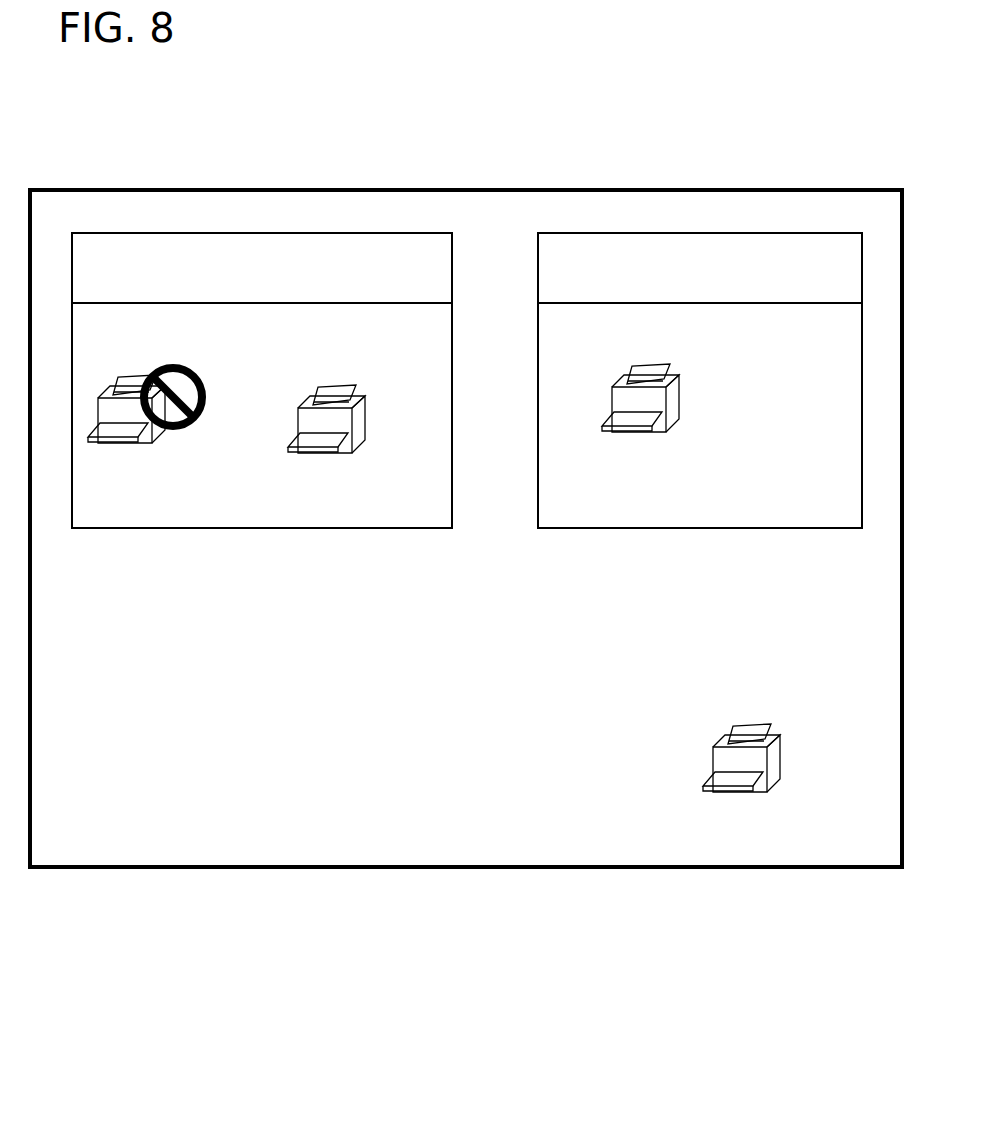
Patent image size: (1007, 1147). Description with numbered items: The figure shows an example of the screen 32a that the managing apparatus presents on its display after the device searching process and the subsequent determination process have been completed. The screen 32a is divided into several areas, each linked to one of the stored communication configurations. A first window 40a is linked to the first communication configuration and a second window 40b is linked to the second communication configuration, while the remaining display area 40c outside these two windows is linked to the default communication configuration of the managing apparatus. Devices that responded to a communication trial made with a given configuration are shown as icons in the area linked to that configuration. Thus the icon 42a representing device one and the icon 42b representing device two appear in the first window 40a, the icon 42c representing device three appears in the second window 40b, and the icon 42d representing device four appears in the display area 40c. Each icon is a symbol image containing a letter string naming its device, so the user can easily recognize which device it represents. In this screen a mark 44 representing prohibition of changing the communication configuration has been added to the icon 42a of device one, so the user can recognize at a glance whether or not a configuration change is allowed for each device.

The screen 32a is at (122, 191).
The first window 40a is at (378, 233).
The second window 40b is at (763, 233).
The display area 40c is at (378, 852).
The icon 42a is at (115, 388).
The icon 42b is at (368, 428).
The icon 42c is at (682, 405).
The icon 42d is at (708, 768).
The mark 44 is at (195, 425).